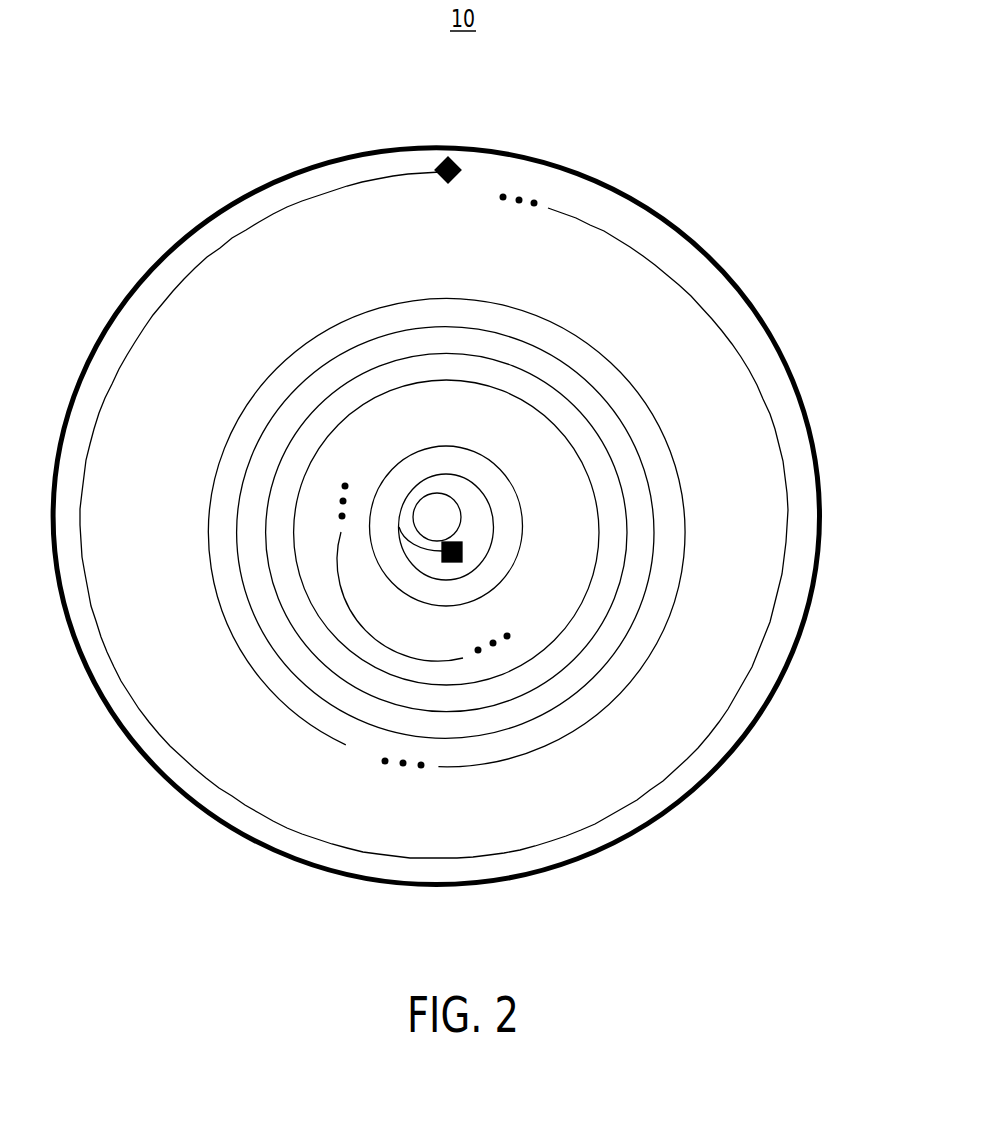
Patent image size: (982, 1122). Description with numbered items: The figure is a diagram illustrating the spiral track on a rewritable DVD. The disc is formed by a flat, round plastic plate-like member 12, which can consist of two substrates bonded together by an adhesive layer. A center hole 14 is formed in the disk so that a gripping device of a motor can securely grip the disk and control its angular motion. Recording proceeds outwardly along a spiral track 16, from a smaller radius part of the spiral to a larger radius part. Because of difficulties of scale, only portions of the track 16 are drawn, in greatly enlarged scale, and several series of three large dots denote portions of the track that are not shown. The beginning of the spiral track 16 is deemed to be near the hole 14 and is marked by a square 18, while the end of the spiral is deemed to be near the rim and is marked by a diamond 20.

The plate-like member 12 is at (585, 174).
The center hole 14 is at (459, 523).
The spiral track 16 is at (513, 477).
The square 18 is at (462, 553).
The diamond 20 is at (447, 158).